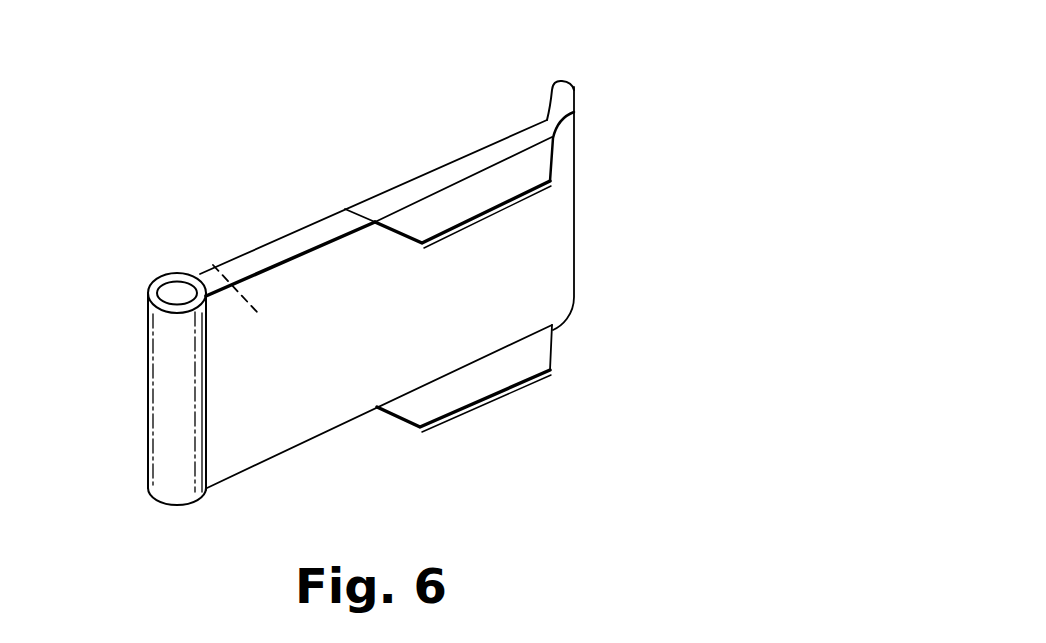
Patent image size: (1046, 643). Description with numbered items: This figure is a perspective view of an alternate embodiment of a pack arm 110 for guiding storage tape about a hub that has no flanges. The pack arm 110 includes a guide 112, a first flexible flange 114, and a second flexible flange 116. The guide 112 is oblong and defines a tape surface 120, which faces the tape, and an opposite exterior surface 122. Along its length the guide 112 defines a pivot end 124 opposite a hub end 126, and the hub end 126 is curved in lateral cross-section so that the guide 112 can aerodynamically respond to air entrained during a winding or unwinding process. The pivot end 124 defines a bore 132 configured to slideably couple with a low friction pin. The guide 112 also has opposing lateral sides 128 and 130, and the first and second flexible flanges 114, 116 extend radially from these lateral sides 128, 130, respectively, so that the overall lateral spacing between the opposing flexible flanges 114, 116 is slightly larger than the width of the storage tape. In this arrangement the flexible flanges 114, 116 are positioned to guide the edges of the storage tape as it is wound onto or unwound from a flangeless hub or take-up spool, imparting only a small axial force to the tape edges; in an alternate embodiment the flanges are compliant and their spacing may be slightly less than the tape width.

The pack arm 110 is at (607, 82).
The guide 112 is at (224, 506).
The first flexible flange 114 is at (466, 196).
The second flexible flange 116 is at (538, 358).
The tape surface 120 is at (347, 402).
The exterior surface 122 is at (223, 275).
The pivot end 124 is at (160, 389).
The hub end 126 is at (576, 232).
The lateral side 128 is at (298, 243).
The lateral side 130 is at (300, 447).
The bore 132 is at (172, 296).